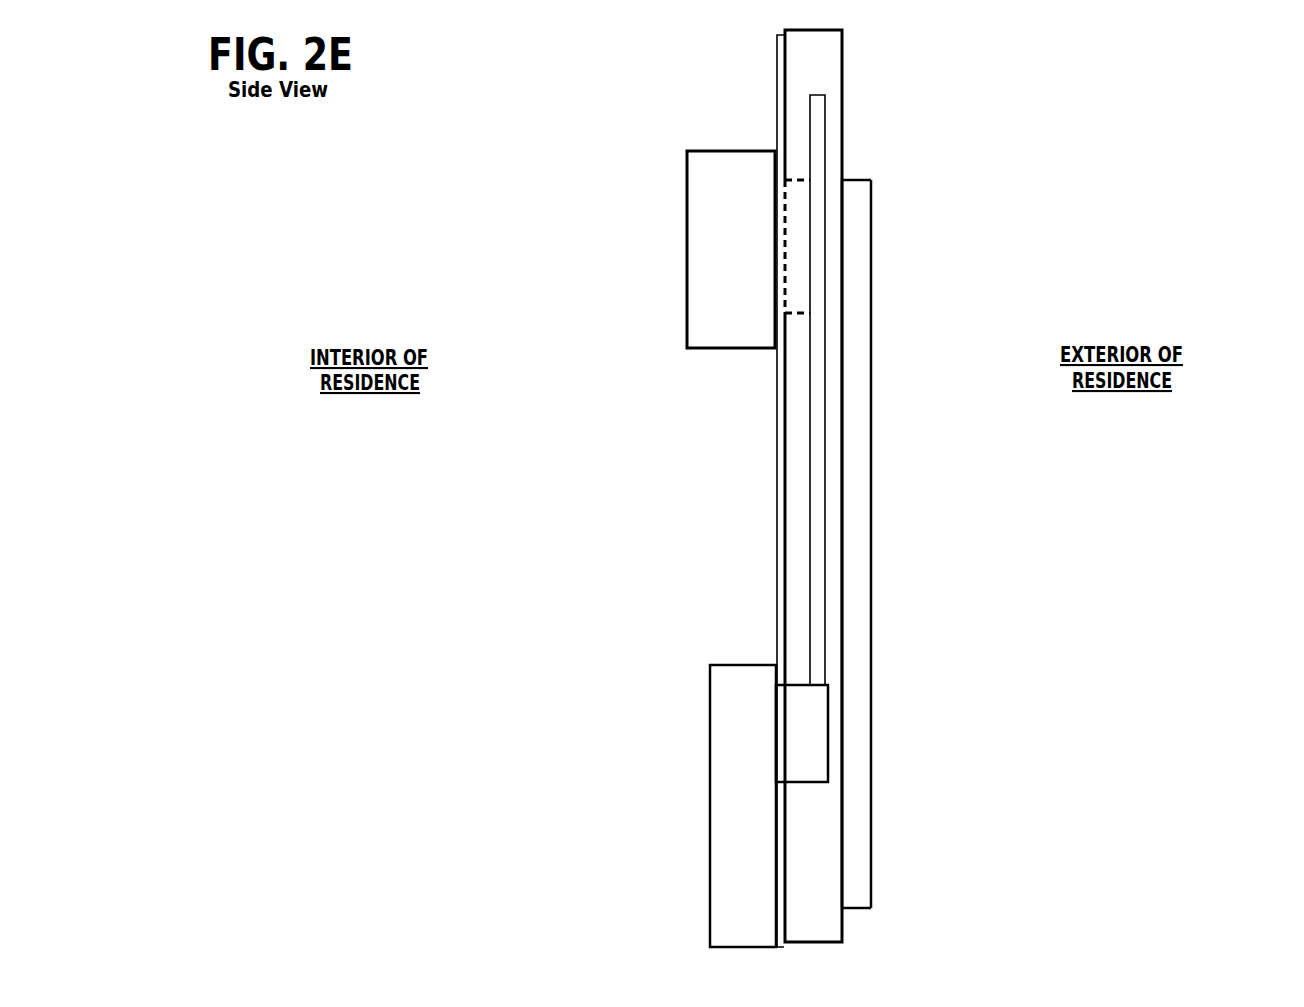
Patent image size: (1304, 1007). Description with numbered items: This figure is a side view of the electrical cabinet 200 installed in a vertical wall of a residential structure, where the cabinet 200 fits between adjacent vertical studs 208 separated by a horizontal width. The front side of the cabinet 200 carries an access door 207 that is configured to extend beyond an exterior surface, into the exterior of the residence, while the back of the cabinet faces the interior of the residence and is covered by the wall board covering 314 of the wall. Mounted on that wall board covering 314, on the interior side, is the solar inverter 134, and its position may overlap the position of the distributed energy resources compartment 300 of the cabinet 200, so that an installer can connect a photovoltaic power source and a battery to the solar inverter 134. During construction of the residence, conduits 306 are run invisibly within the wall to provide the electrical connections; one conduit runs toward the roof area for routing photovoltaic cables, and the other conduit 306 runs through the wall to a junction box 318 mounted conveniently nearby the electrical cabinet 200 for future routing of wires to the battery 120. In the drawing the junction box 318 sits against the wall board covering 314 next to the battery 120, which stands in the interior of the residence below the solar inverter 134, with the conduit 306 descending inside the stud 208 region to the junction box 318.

The vertical stud 208 is at (842, 62).
The conduit 306 is at (825, 147).
The distributed energy resources compartment 300 is at (811, 243).
The solar inverter 134 is at (677, 186).
The wall board covering 314 is at (766, 563).
The electrical cabinet 200 is at (918, 548).
The access door 207 is at (881, 658).
The junction box 318 is at (823, 734).
The battery 120 is at (699, 810).